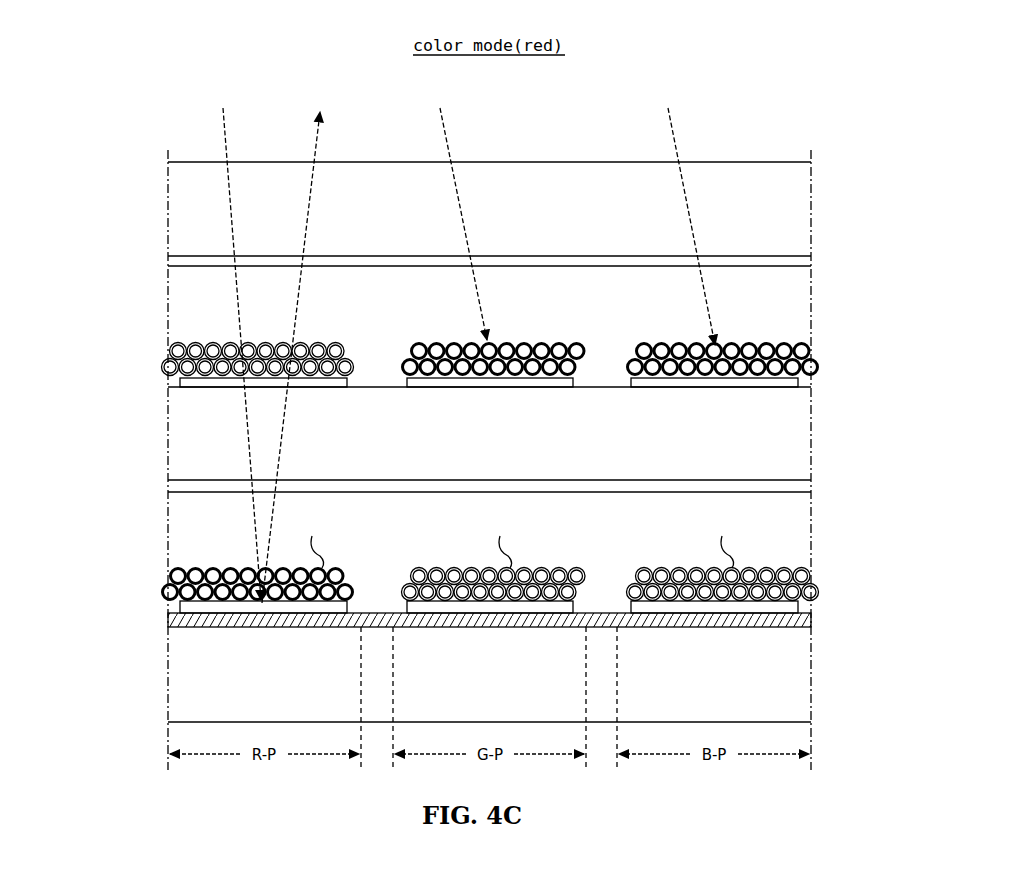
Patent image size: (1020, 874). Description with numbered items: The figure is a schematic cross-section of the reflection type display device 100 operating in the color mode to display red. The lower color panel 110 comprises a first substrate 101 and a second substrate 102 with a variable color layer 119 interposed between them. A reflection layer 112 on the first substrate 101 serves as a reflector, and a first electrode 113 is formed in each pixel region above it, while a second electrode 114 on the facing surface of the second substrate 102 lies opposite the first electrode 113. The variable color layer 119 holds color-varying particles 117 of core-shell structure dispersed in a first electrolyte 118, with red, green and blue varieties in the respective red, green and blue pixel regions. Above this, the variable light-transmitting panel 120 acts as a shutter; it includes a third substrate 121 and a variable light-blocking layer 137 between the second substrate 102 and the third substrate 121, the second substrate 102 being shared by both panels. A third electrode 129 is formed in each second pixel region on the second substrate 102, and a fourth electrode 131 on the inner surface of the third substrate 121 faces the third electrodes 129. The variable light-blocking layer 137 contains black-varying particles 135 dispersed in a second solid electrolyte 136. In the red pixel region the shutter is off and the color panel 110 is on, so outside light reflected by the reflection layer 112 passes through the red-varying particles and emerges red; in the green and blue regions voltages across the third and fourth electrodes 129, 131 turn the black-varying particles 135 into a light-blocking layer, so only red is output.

The reflection type display device 100 is at (748, 66).
The first substrate 101 is at (792, 700).
The second substrate 102 is at (792, 455).
The color panel 110 is at (812, 722).
The reflection layer 112 is at (185, 619).
The first electrode 113 is at (192, 606).
The second electrode 114 is at (180, 486).
The color-varying particles 117 is at (182, 574).
The first electrolyte 118 is at (180, 556).
The variable color layer 119 is at (92, 552).
The variable light-transmitting panel 120 is at (812, 162).
The third substrate 121 is at (792, 228).
The third electrode 129 is at (188, 382).
The fourth electrode 131 is at (176, 262).
The black-varying particles 135 is at (180, 340).
The second solid electrolyte 136 is at (178, 302).
The variable light-blocking layer 137 is at (97, 300).